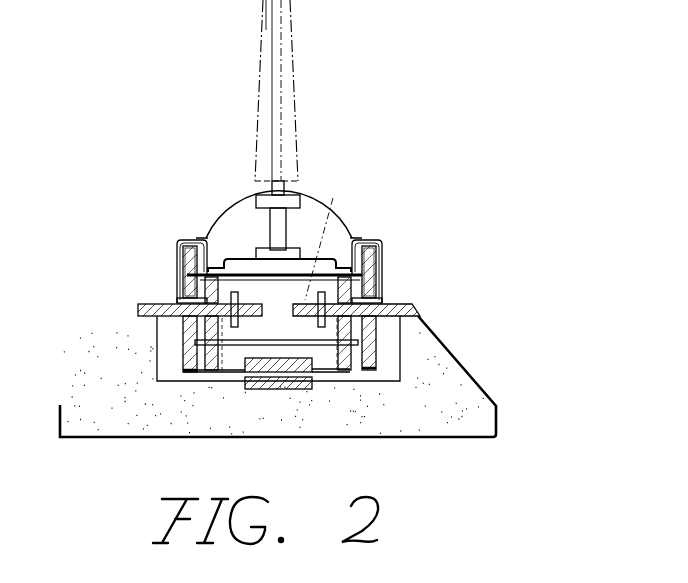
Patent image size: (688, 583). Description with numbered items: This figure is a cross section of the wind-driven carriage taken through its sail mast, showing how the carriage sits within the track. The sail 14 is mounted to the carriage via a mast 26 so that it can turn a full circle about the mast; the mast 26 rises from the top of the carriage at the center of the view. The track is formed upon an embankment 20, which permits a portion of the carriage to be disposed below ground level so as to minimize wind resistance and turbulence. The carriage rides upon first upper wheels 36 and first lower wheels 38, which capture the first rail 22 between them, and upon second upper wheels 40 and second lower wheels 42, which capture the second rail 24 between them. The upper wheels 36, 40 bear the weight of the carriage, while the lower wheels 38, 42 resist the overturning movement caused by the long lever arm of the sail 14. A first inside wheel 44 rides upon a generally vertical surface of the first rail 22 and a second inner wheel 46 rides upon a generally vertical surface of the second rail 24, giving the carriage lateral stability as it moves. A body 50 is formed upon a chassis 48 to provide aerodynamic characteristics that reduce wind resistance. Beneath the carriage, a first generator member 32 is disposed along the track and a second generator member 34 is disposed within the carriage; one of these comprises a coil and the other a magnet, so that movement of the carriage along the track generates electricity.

The sail 14 is at (265, 24).
The embankment 20 is at (455, 364).
The first rail 22 is at (160, 304).
The second rail 24 is at (392, 304).
The mast 26 is at (283, 87).
The first generator member 32 is at (267, 386).
The second generator member 34 is at (323, 387).
The first upper wheels 36 is at (177, 254).
The first lower wheels 38 is at (195, 342).
The second upper wheels 40 is at (370, 260).
The second lower wheels 42 is at (402, 342).
The first inside wheel 44 is at (217, 268).
The second inner wheel 46 is at (337, 213).
The chassis 48 is at (210, 270).
The body 50 is at (258, 310).